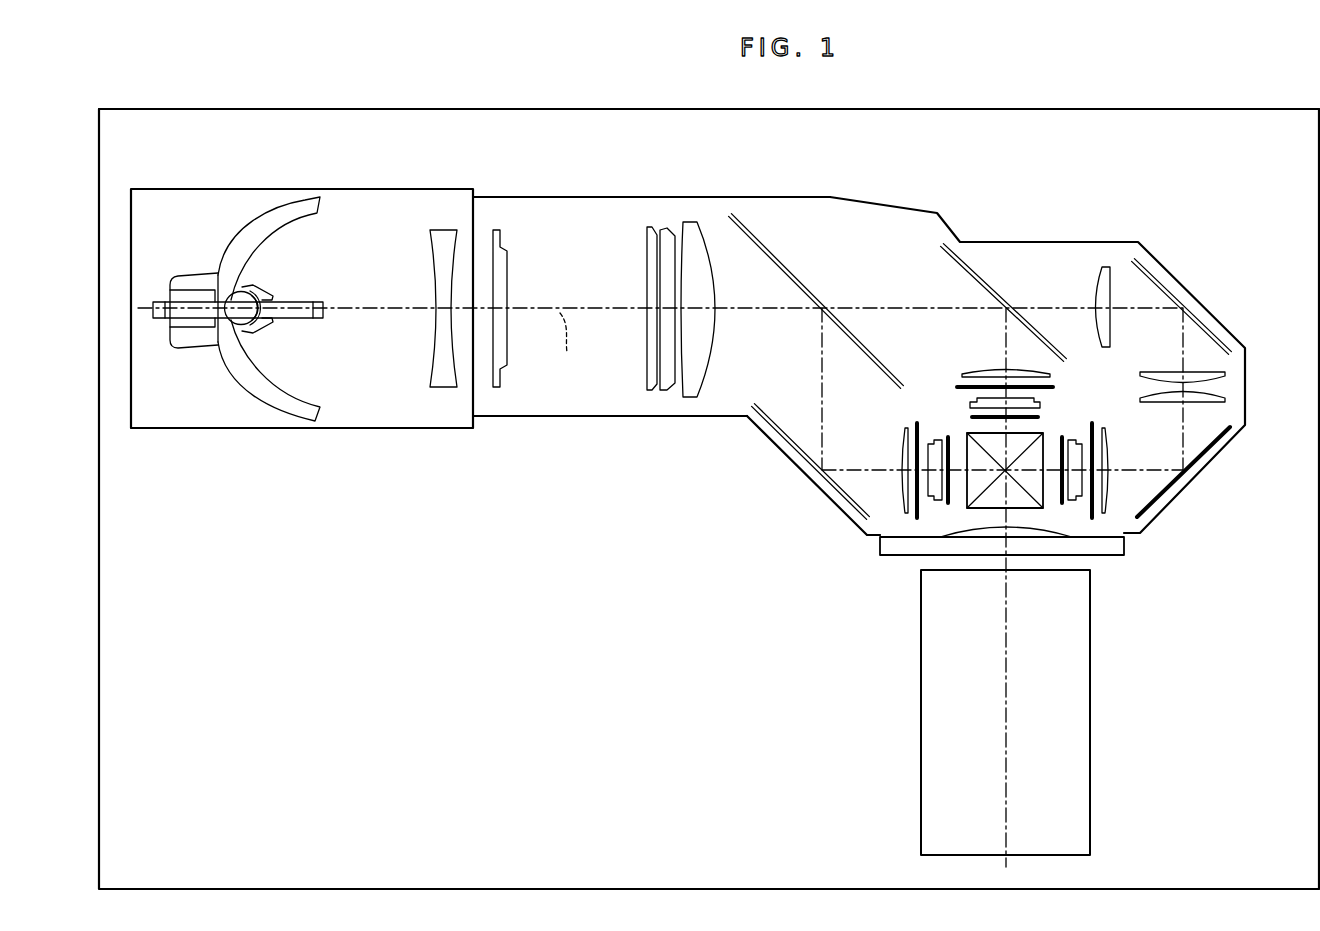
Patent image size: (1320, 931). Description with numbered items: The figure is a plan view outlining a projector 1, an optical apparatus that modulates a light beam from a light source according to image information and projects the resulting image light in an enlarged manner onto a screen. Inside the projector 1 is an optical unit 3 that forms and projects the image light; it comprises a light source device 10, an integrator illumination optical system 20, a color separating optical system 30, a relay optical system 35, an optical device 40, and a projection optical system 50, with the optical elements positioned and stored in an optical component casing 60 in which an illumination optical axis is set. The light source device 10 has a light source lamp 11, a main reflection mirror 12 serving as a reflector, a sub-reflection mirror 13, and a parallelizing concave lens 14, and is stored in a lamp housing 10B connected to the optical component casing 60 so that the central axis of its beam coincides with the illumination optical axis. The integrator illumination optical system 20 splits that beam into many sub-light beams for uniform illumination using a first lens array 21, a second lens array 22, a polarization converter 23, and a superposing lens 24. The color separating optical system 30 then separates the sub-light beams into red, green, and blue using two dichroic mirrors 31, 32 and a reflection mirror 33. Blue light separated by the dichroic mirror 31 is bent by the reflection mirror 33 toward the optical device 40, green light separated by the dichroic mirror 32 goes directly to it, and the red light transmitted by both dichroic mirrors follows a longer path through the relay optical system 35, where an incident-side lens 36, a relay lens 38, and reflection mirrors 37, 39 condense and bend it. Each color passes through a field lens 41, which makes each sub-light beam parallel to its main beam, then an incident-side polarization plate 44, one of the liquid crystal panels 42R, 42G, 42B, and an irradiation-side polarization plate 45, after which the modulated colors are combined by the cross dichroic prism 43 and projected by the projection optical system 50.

The projector 1 is at (1076, 74).
The optical unit 3 is at (652, 468).
The light source device 10 is at (405, 68).
The lamp housing 10B is at (287, 430).
The light source lamp 11 is at (305, 298).
The main reflection mirror 12 is at (293, 201).
The sub-reflection mirror 13 is at (290, 287).
The parallelizing concave lens 14 is at (440, 228).
The integrator illumination optical system 20 is at (657, 158).
The first lens array 21 is at (507, 268).
The second lens array 22 is at (652, 232).
The polarization converter 23 is at (670, 230).
The superposing lens 24 is at (705, 257).
The color separating optical system 30 is at (885, 234).
The dichroic mirror 31 is at (768, 247).
The dichroic mirror 32 is at (990, 290).
The reflection mirror 33 is at (774, 425).
The relay optical system 35 is at (1190, 270).
The incident-side lens 36 is at (1101, 265).
The reflection mirror 37 is at (1207, 329).
The relay lens 38 is at (1226, 396).
The reflection mirror 39 is at (1210, 447).
The optical device 40 is at (1105, 393).
The field lens 41 is at (988, 371).
The liquid crystal panel 42B is at (930, 500).
The liquid crystal panel 42G is at (970, 404).
The liquid crystal panel 42R is at (1078, 502).
The cross dichroic prism 43 is at (1017, 508).
The incident-side polarization plate 44 is at (958, 386).
The irradiation-side polarization plate 45 is at (972, 416).
The projection optical system 50 is at (1090, 720).
The optical component casing 60 is at (1020, 241).